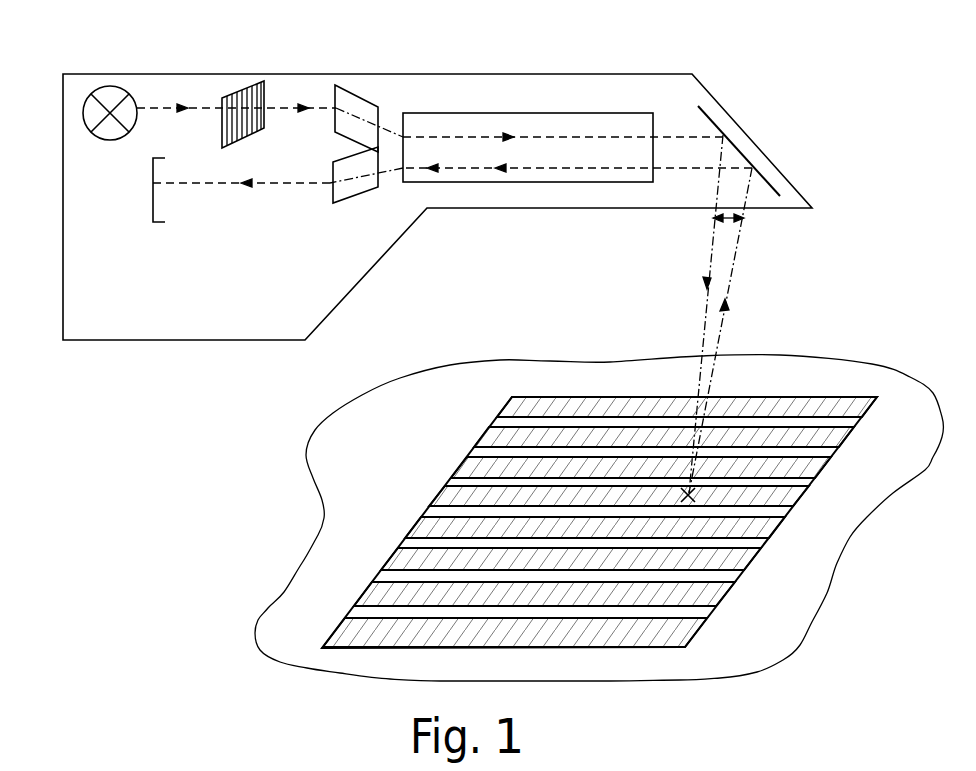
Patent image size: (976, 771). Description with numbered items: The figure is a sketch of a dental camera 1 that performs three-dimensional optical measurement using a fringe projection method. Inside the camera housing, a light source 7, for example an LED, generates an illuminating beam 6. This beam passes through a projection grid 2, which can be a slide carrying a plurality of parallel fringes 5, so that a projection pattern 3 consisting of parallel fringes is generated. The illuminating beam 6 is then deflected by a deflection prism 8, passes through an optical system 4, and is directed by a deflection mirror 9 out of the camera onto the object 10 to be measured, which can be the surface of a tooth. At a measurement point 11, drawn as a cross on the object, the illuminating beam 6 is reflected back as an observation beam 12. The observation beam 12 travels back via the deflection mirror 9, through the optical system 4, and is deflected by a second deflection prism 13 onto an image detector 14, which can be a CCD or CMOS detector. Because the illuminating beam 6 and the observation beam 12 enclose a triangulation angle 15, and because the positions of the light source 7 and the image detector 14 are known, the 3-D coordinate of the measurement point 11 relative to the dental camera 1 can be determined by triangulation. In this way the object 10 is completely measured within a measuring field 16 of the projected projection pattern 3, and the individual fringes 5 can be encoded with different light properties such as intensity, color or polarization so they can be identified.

The dental camera 1 is at (385, 257).
The projection grid 2 is at (240, 92).
The projection pattern 3 is at (475, 447).
The optical system 4 is at (597, 172).
The fringes 5 is at (238, 112).
The illuminating beam 6 is at (153, 108).
The light source 7 is at (110, 98).
The deflection prism 8 is at (356, 107).
The deflection mirror 9 is at (713, 124).
The object to be measured 10 is at (828, 541).
The measurement point 11 is at (690, 497).
The observation beam 12 is at (275, 184).
The second deflection prism 13 is at (350, 202).
The image detector 14 is at (153, 203).
The triangulation angle 15 is at (738, 228).
The measuring field 16 is at (812, 397).